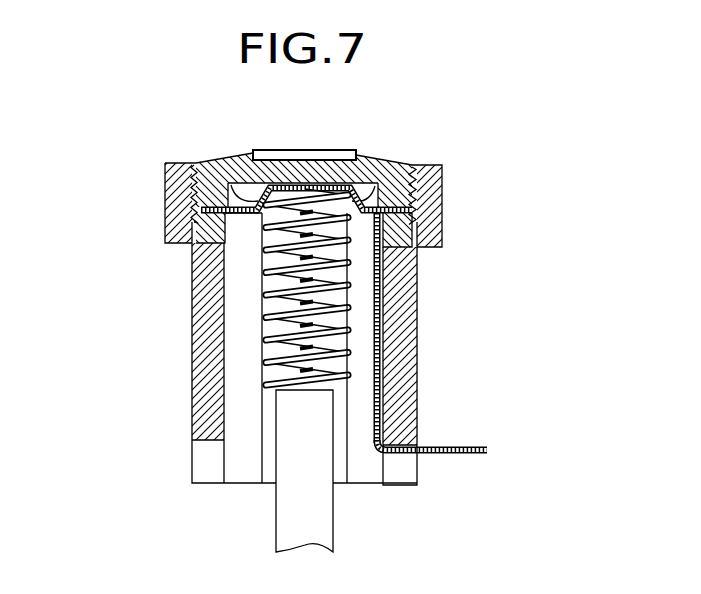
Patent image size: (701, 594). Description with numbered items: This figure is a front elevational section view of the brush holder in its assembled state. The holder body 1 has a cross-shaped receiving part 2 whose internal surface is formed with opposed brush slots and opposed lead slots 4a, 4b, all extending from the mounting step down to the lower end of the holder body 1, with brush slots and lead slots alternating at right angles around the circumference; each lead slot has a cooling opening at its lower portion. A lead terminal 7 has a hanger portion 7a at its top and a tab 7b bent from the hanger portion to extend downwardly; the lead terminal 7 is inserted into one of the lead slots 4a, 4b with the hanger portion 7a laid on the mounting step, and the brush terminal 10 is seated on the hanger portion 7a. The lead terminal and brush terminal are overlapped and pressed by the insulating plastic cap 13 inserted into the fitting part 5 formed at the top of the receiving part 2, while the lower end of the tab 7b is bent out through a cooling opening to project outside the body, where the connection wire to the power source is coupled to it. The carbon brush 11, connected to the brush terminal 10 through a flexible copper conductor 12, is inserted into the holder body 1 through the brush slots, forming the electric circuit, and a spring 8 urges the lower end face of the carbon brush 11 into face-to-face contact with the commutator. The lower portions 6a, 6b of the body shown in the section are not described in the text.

The holder body 1 is at (193, 315).
The cross-shaped receiving part 2 is at (263, 350).
The lead slot 4a is at (243, 403).
The lead slot 4b is at (363, 390).
The fitting part 5 is at (412, 165).
The bottom block left 6a is at (212, 460).
The bottom block right 6b is at (407, 470).
The lead terminal 7 is at (377, 322).
The hanger portion 7a is at (400, 222).
The tab 7b is at (450, 445).
The spring 8 is at (262, 272).
The brush terminal 10 is at (229, 184).
The carbon brush 11 is at (300, 527).
The flexible copper conductor 12 is at (256, 240).
The plastic cap 13 is at (368, 156).